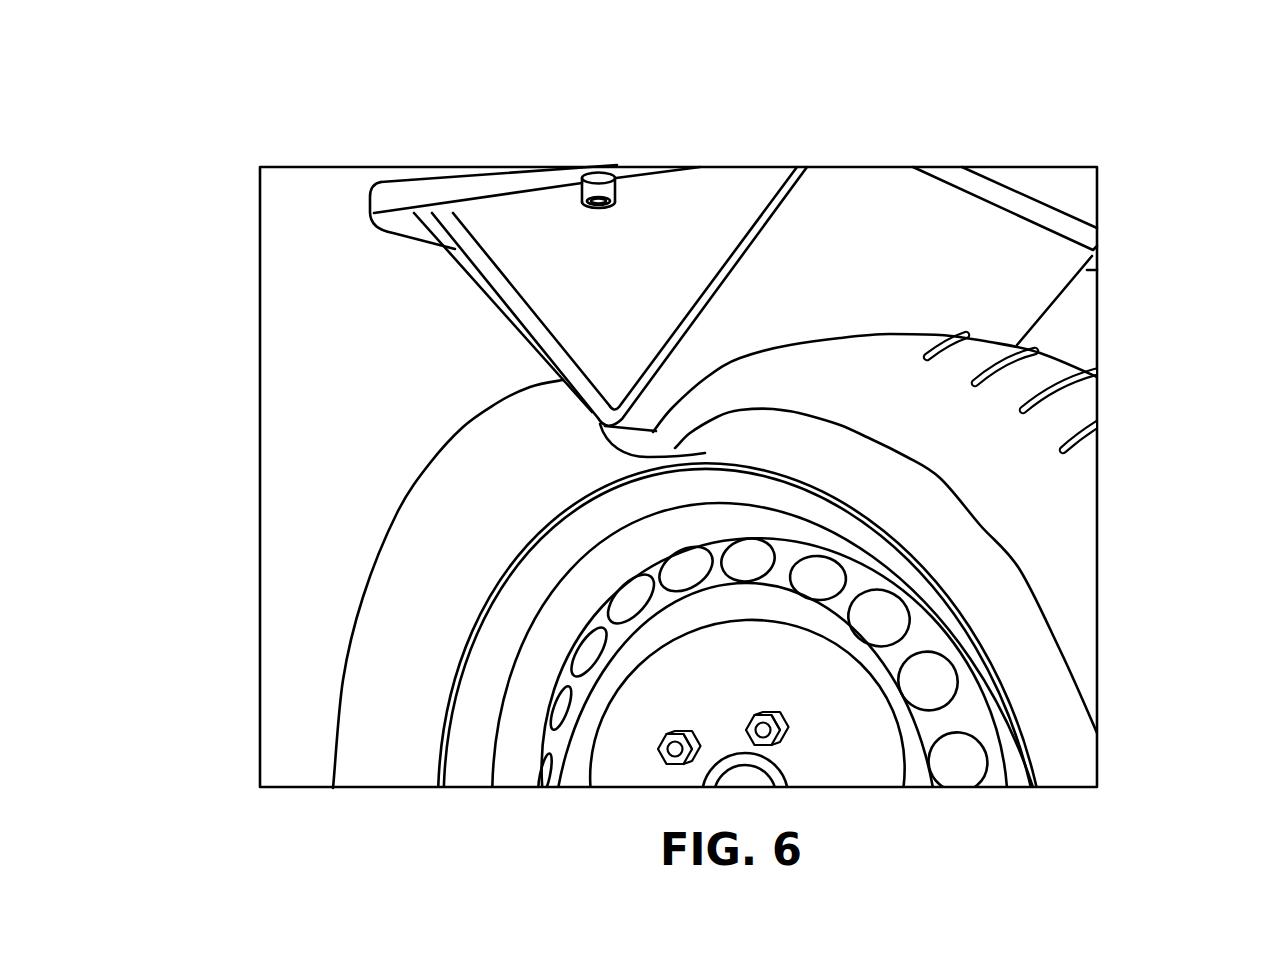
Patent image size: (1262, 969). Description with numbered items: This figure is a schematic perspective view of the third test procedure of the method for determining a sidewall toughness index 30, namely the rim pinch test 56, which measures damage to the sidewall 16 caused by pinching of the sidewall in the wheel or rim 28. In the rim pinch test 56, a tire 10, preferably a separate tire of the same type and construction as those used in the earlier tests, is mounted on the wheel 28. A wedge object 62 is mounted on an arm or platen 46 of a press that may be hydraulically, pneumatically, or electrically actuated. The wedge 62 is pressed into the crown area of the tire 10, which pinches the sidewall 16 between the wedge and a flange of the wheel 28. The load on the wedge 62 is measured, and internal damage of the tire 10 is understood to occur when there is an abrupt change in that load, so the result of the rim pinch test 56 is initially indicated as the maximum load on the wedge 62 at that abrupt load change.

The tire 10 is at (366, 517).
The sidewall 16 is at (1023, 520).
The wheel 28 is at (930, 567).
The method for determining a sidewall toughness index 30 is at (1169, 131).
The arm or platen 46 is at (461, 176).
The rim pinch test 56 is at (453, 388).
The wedge object 62 is at (710, 291).